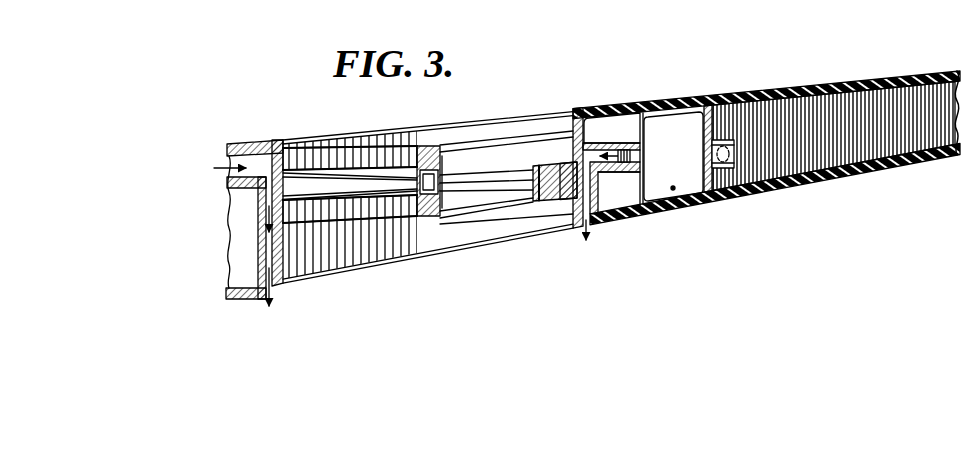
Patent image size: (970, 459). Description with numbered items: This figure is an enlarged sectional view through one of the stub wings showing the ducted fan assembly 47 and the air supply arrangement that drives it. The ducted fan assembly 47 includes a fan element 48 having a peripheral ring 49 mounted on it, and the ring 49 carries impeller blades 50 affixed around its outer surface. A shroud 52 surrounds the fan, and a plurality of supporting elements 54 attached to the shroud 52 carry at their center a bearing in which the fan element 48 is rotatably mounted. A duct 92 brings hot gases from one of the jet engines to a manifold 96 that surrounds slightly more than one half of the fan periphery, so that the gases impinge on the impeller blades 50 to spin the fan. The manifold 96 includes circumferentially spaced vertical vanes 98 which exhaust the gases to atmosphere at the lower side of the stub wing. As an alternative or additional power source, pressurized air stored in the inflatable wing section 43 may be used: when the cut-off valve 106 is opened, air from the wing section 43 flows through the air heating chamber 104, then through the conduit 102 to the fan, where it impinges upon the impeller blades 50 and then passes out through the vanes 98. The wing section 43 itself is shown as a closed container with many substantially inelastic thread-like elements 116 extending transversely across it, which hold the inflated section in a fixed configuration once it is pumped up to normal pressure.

The inflatable wing section 43 is at (835, 85).
The ducted fan assembly 47 is at (567, 98).
The fan element 48 is at (295, 186).
The peripheral ring 49 is at (537, 200).
The impeller blades 50 is at (262, 150).
The shroud 52 is at (431, 218).
The supporting elements 54 is at (496, 217).
The duct 92 is at (232, 165).
The manifold 96 is at (262, 240).
The vertical vanes 98 is at (266, 290).
The conduit 102 is at (604, 141).
The air heating chamber 104 is at (674, 126).
The cut-off valve 106 is at (722, 207).
The thread-like elements 116 is at (838, 150).